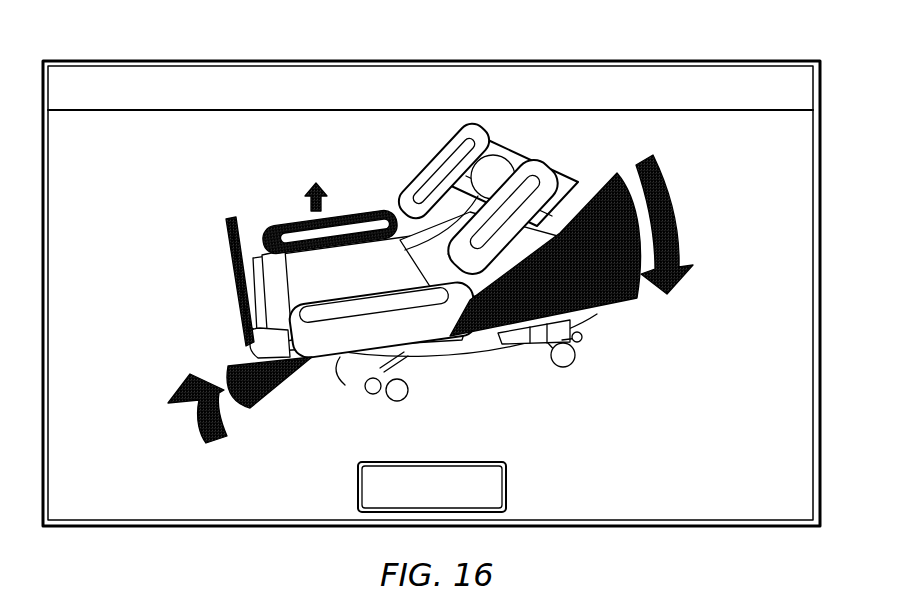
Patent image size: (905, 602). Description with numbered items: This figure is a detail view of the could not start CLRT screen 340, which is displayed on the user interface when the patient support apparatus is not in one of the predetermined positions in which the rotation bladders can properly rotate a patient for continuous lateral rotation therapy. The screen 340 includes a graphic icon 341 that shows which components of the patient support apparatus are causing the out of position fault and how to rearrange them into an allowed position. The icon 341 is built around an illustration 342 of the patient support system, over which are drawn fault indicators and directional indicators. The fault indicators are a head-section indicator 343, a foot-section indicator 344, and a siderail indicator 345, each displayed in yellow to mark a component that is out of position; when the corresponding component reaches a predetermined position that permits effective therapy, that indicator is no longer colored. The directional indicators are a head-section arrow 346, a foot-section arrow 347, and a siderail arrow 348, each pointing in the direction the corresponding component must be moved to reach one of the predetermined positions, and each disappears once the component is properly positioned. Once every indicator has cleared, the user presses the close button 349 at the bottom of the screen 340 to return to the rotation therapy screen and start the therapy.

The could not start CLRT screen 340 is at (648, 56).
The graphic icon 341 is at (590, 172).
The illustration of the patient support system 342 is at (420, 164).
The head-section indicator 343 is at (626, 306).
The foot-section indicator 344 is at (280, 401).
The siderail indicator 345 is at (336, 206).
The head-section arrow 346 is at (690, 227).
The foot-section arrow 347 is at (206, 437).
The siderail arrow 348 is at (303, 199).
The close button 349 is at (433, 458).